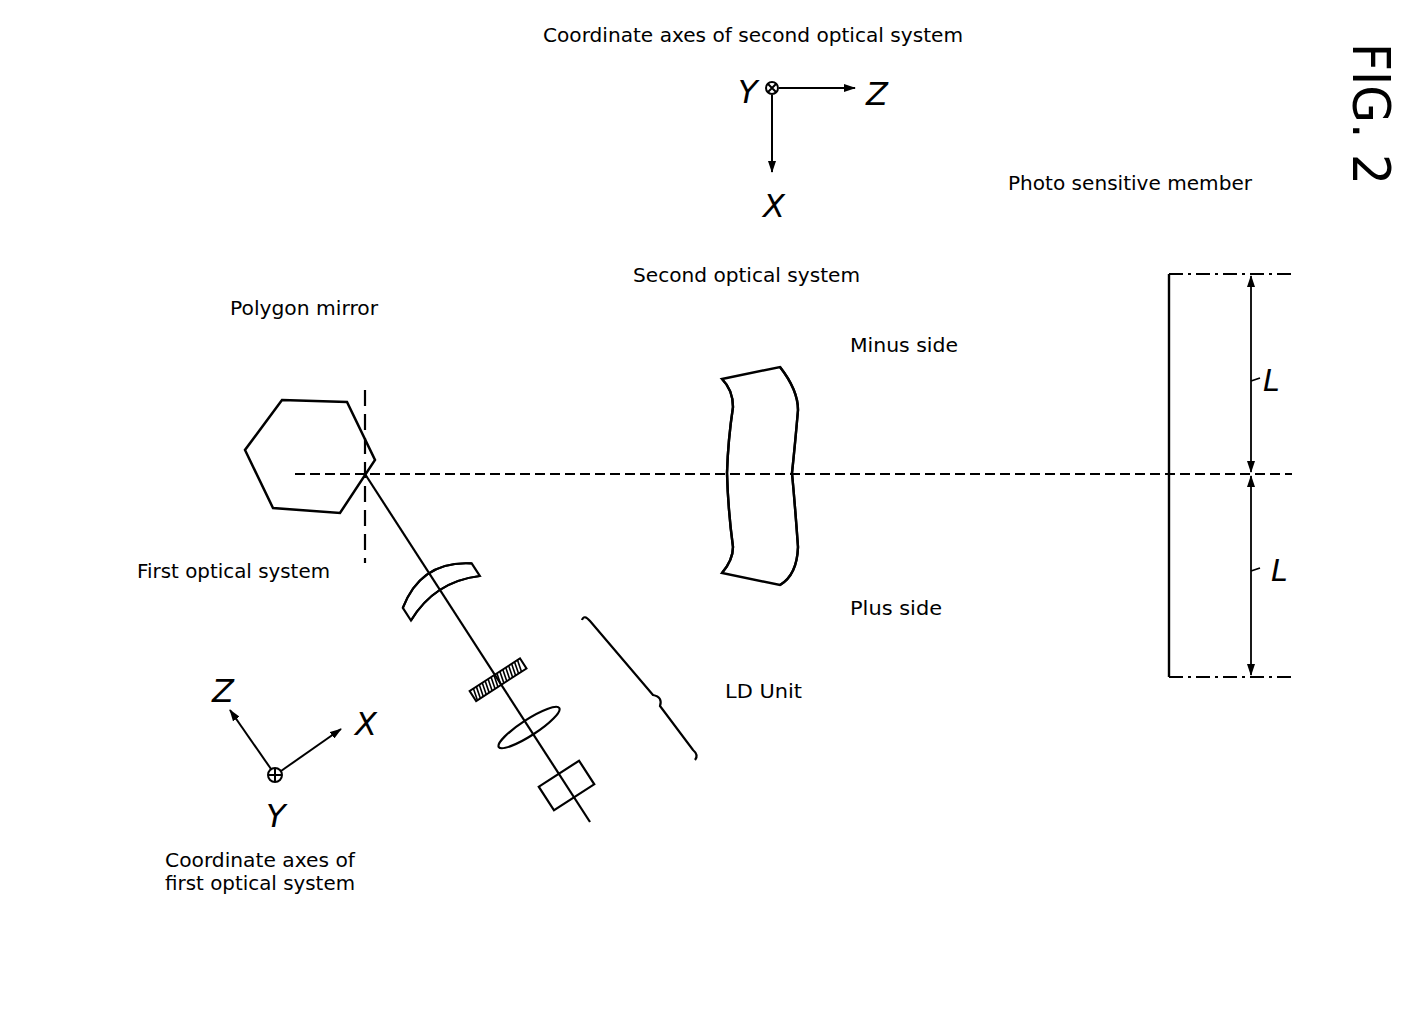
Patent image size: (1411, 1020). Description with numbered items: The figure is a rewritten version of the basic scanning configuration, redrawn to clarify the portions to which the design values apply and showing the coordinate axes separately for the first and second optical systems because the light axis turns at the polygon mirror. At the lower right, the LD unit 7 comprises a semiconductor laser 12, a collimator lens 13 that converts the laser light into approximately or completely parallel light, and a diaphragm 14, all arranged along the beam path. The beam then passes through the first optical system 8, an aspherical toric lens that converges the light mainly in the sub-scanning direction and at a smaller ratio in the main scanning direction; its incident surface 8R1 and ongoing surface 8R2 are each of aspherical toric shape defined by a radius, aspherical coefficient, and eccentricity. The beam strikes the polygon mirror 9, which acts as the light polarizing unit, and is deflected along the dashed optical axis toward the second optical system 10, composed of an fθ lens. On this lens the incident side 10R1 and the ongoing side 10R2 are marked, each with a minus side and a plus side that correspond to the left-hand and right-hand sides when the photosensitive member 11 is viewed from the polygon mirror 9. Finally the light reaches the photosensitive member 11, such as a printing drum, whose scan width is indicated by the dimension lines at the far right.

The LD unit 7 is at (641, 688).
The first optical system 8 is at (403, 611).
The incident surface 8R1 is at (435, 608).
The ongoing surface 8R2 is at (446, 573).
The polygon mirror 9 is at (312, 398).
The second optical system 10 is at (763, 370).
The incident side 10R1 is at (730, 439).
The ongoing side 10R2 is at (793, 407).
The photosensitive member 11 is at (1169, 293).
The semiconductor laser 12 is at (593, 773).
The collimator lens 13 is at (562, 708).
The diaphragm 14 is at (526, 664).